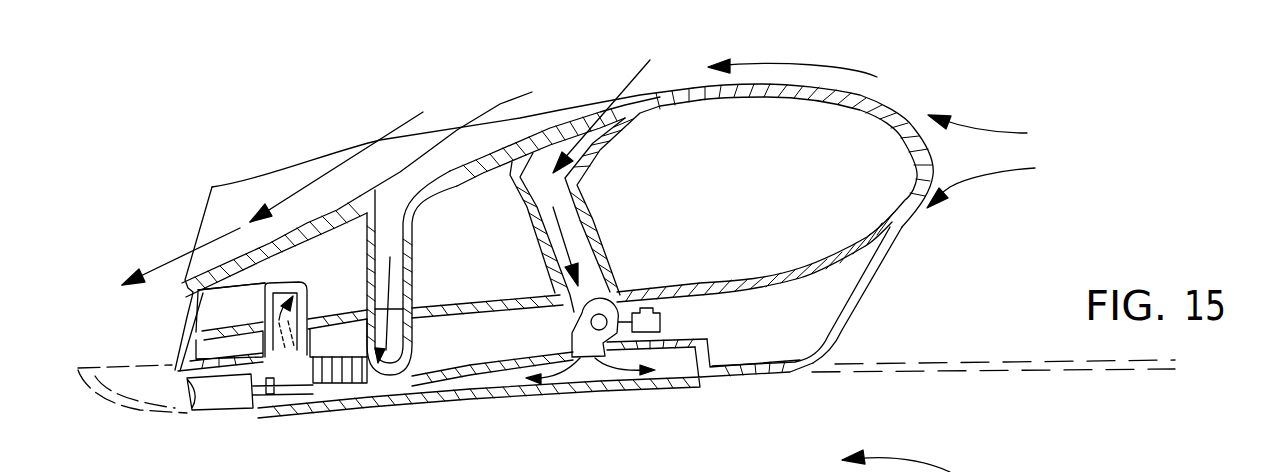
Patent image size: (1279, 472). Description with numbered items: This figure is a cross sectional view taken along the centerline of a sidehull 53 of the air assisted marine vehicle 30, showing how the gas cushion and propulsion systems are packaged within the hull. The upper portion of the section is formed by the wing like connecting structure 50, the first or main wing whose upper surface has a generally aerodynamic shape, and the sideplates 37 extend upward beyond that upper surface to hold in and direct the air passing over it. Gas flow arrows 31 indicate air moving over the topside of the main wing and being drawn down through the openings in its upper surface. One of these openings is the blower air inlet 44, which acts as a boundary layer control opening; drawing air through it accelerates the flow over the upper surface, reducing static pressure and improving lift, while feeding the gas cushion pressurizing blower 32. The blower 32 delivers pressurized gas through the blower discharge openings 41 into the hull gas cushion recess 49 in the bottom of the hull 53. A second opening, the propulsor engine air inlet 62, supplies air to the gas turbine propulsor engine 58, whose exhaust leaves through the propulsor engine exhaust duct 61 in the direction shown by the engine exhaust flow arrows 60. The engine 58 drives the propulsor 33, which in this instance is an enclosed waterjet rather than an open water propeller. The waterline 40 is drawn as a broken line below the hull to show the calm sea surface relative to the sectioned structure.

The marine vehicle 30 is at (257, 173).
The gas flow arrows 31 is at (627, 73).
The gas cushion pressurizing blower 32 is at (577, 332).
The propulsor 33 is at (225, 413).
The sideplates 37 is at (237, 183).
The waterline 40 is at (900, 360).
The blower discharge openings 41 is at (593, 358).
The blower air inlet 44 is at (568, 124).
The hull gas cushion recess 49 is at (497, 378).
The wing like connecting structure 50 is at (735, 95).
The sidehull 53 is at (874, 288).
The gas turbine propulsor engine 58 is at (343, 372).
The engine exhaust flow arrows 60 is at (304, 306).
The propulsor engine exhaust duct 61 is at (268, 287).
The propulsor engine air inlet 62 is at (392, 211).